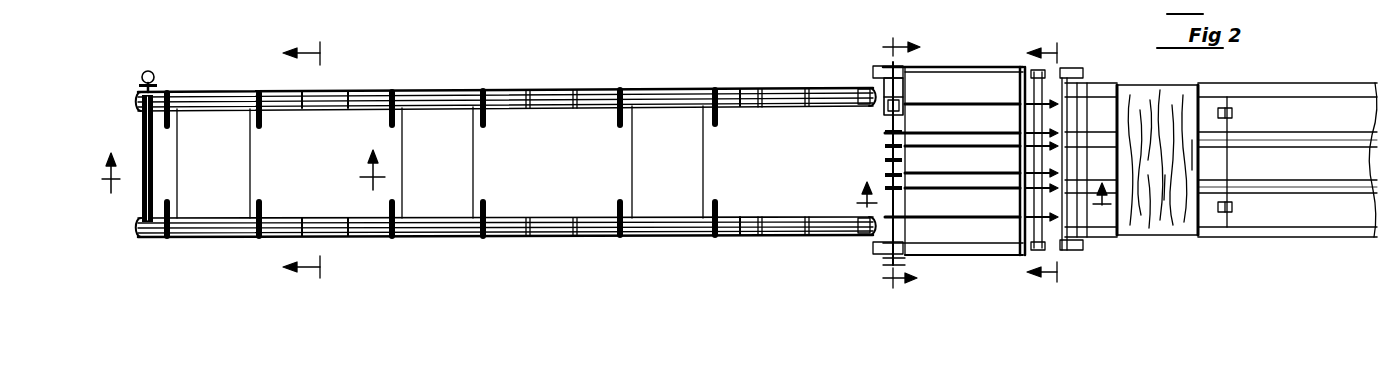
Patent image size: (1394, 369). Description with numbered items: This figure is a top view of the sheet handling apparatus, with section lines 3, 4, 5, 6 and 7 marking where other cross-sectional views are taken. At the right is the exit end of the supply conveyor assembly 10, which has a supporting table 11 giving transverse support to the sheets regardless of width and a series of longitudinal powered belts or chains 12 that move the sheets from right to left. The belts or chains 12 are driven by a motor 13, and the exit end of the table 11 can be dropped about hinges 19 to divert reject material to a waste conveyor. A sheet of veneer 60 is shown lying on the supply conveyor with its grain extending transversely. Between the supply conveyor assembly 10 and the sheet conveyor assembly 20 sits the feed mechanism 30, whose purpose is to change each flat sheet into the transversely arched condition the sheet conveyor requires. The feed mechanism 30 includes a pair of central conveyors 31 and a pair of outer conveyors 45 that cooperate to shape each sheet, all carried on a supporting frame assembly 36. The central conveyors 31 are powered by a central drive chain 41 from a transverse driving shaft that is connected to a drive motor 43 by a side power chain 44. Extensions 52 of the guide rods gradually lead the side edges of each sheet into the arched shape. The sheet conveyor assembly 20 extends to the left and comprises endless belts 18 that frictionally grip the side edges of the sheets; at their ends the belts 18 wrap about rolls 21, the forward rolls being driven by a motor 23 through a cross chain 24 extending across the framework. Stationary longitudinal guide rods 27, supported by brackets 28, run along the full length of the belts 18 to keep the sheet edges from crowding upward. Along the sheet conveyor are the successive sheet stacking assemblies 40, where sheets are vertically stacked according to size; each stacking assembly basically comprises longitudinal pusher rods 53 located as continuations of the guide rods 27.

The section line 3- 3 is at (311, 162).
The section line 4- 4 is at (239, 171).
The section line 5- 5 is at (1052, 162).
The section line 6- 6 is at (975, 204).
The section line 7- 7 is at (895, 160).
The supply conveyor assembly 10 is at (1235, 241).
The supporting table 11 is at (1273, 178).
The longitudinal powered belts or chains 12 is at (1325, 138).
The motor 13 is at (1110, 245).
The endless belts 18 is at (322, 112).
The hinges 19 is at (1233, 113).
The sheet conveyor assembly 20 is at (597, 92).
The rolls 21 is at (139, 99).
The motor 23 is at (141, 77).
The cross chain 24 is at (142, 190).
The longitudinal guide rods 27 is at (281, 109).
The brackets 28 is at (575, 90).
The feed mechanism 30 is at (968, 63).
The central conveyors 31 is at (940, 140).
The supporting frame assembly 36 is at (938, 247).
The sheet stacking assemblies 40 is at (216, 212).
The central drive chain 41 is at (886, 160).
The drive motor 43 is at (904, 100).
The side power chain 44 is at (899, 69).
The outer conveyors 45 is at (1013, 140).
The extensions 52 is at (928, 217).
The longitudinal pusher rods 53 is at (209, 110).
The veneer 60 is at (1163, 233).